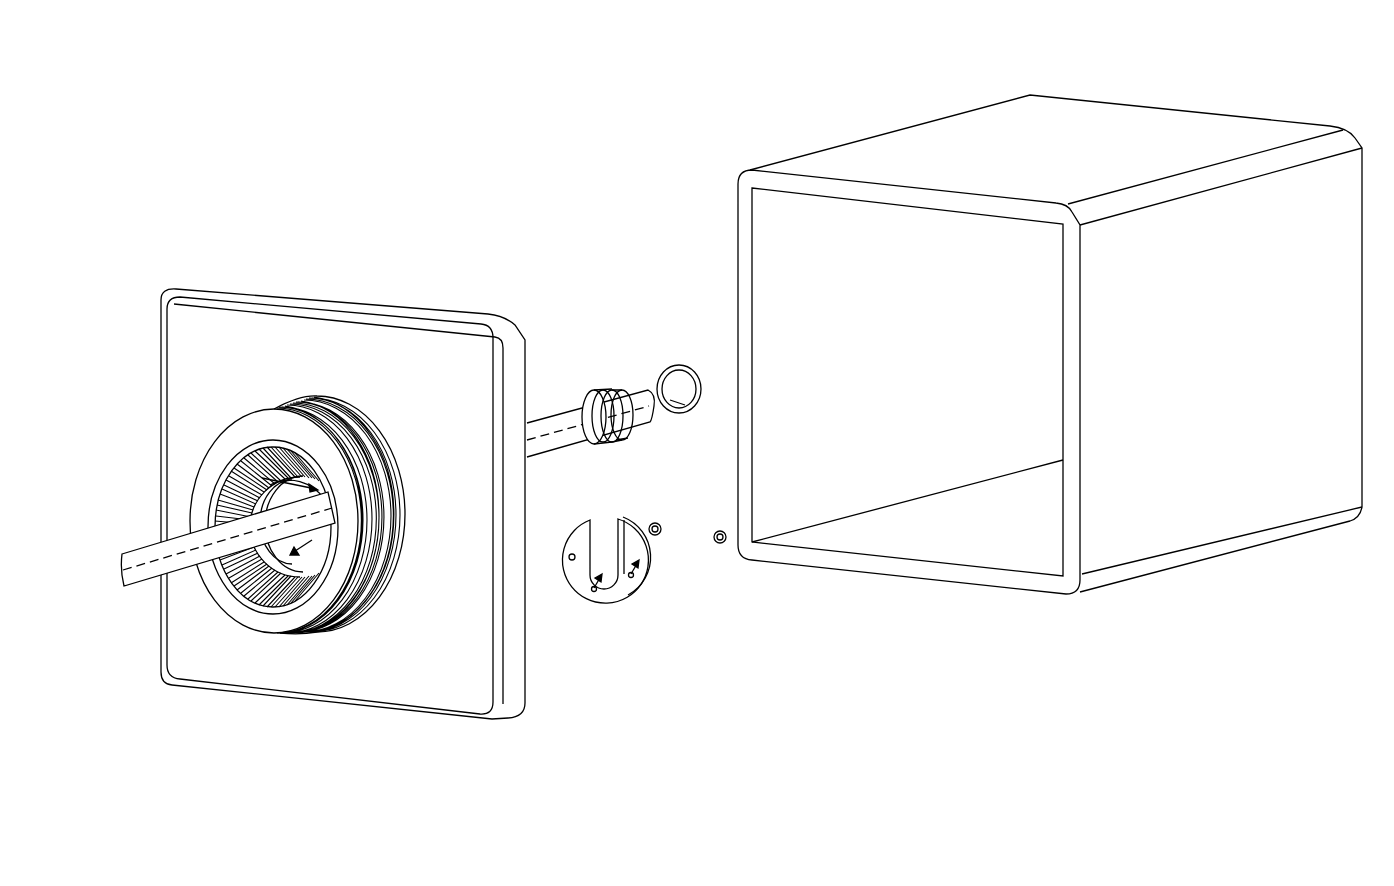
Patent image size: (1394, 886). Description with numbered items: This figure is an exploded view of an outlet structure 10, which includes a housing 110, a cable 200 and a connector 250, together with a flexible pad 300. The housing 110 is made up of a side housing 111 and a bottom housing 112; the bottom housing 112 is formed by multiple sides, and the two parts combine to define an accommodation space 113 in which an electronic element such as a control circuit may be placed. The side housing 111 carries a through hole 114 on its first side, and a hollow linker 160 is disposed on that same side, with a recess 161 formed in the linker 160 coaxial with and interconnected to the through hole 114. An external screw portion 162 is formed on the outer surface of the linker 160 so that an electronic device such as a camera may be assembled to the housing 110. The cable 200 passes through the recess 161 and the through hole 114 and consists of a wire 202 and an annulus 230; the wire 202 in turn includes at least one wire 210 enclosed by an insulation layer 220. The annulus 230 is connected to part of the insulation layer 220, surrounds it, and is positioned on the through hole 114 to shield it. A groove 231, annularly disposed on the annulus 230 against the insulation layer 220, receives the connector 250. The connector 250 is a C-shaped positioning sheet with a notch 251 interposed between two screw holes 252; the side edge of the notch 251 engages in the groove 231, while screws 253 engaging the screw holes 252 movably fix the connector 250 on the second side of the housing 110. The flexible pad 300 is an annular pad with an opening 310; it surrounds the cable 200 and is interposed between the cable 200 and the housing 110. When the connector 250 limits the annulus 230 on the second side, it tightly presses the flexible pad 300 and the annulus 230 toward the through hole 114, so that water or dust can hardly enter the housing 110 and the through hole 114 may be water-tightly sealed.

The outlet structure 10 is at (1324, 61).
The housing 110 is at (302, 30).
The side housing 111 is at (205, 293).
The bottom housing 112 is at (975, 122).
The accommodation space 113 is at (1027, 555).
The through hole 114 is at (247, 450).
The linker 160 is at (202, 505).
The recess 161 is at (223, 570).
The external screw portion 162 is at (275, 402).
The cable 200 is at (662, 253).
The wire 202 is at (615, 297).
The wire 210 is at (545, 430).
The insulation layer 220 is at (578, 403).
The annulus 230 is at (603, 393).
The groove 231 is at (627, 443).
The connector 250 is at (677, 673).
The notch 251 is at (588, 600).
The screw holes 252 is at (618, 600).
The screws 253 is at (656, 536).
The flexible pad 300 is at (680, 410).
The opening 310 is at (677, 405).